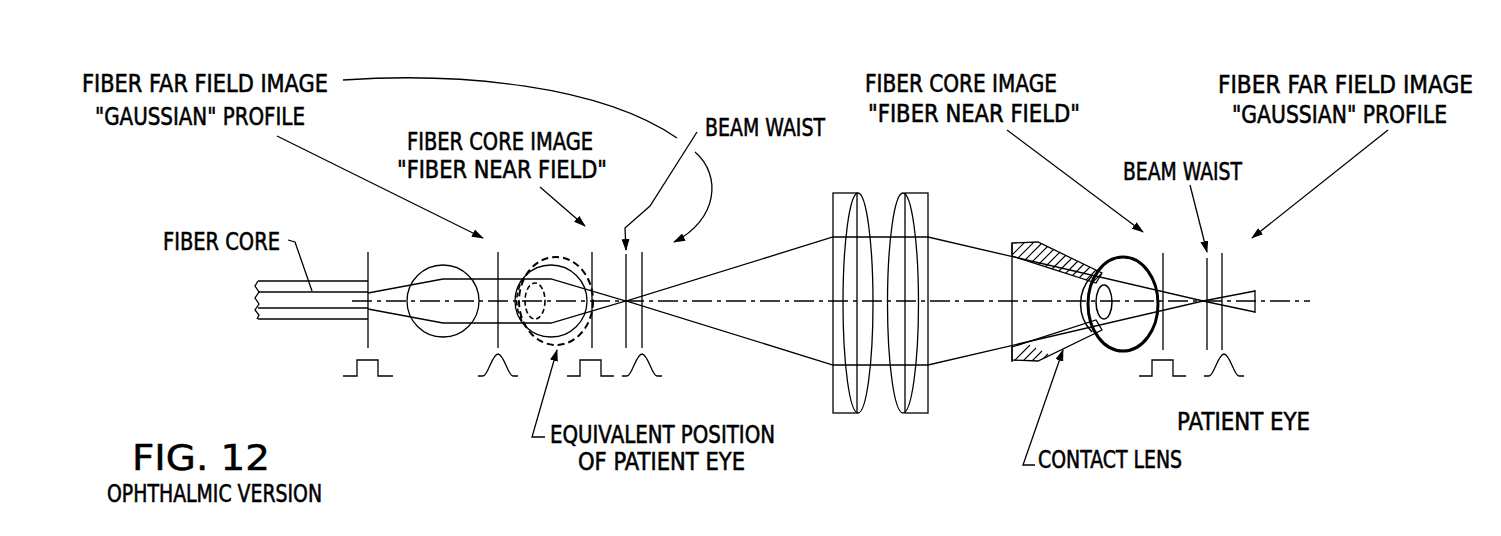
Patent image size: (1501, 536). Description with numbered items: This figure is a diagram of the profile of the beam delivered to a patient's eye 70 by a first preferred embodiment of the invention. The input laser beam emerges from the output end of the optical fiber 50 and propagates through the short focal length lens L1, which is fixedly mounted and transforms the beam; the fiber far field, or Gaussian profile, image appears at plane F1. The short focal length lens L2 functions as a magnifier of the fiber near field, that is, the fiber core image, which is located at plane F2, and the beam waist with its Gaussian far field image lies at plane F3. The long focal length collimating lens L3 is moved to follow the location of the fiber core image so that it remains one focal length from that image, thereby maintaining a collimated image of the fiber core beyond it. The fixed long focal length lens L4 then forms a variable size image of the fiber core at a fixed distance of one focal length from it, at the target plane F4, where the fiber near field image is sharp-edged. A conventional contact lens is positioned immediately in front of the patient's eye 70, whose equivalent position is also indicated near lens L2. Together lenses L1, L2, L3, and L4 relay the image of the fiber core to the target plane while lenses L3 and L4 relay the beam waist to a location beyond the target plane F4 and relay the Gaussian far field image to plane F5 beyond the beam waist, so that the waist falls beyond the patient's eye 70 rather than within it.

The optical fiber 50 is at (300, 325).
The patient's eye 70 is at (1122, 346).
The short focal length lens L1 is at (443, 287).
The short focal length lens L2 is at (551, 281).
The long focal length collimating lens L3 is at (853, 288).
The long focal length lens L4 is at (908, 288).
The plane F1 is at (498, 300).
The plane of fiber core image F2 is at (590, 300).
The plane F3 is at (642, 300).
The target plane F4 is at (1162, 302).
The plane of Gaussian far field image F5 is at (1224, 301).